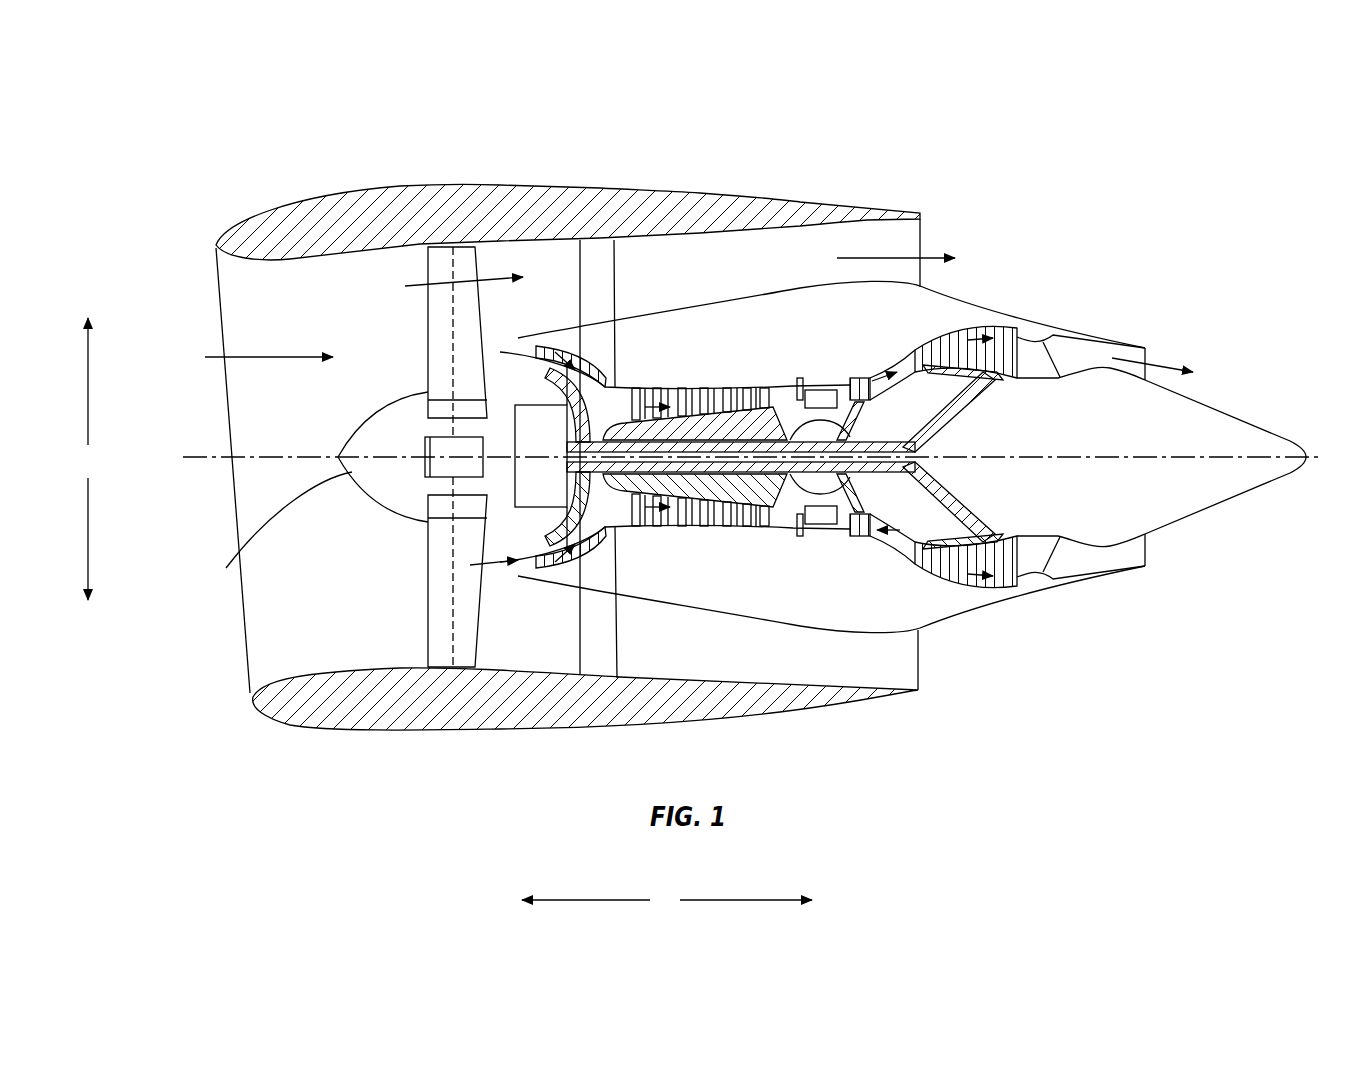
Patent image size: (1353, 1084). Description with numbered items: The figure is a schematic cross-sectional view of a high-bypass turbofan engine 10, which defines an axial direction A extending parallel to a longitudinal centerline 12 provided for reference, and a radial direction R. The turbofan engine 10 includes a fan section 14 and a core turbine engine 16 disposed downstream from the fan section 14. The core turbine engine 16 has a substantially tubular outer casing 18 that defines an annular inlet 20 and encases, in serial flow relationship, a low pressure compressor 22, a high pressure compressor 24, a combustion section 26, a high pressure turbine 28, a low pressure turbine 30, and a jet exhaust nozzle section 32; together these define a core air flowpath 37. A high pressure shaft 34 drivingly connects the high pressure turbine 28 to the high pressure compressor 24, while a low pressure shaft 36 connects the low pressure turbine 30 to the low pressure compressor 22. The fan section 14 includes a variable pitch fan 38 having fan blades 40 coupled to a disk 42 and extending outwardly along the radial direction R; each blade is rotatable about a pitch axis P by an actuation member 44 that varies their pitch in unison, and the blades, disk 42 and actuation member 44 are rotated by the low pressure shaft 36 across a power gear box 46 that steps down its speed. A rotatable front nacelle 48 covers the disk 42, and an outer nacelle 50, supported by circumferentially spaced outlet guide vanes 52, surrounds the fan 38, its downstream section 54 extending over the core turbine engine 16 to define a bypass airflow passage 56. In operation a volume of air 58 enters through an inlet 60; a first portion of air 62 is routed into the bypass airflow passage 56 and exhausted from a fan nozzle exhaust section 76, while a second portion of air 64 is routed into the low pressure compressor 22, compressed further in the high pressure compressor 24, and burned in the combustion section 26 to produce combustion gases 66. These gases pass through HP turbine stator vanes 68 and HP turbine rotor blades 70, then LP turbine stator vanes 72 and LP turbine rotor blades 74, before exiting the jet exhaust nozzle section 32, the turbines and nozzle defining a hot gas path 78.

The turbofan engine 10 is at (1060, 203).
The longitudinal centerline 12 is at (1083, 453).
The fan section 14 is at (405, 175).
The core turbine engine 16 is at (787, 350).
The outer casing 18 is at (777, 620).
The annular inlet 20 is at (520, 558).
The low pressure compressor 22 is at (578, 520).
The high pressure compressor 24 is at (643, 520).
The combustion section 26 is at (817, 523).
The high pressure turbine 28 is at (930, 520).
The low pressure turbine 30 is at (1000, 583).
The jet exhaust nozzle section 32 is at (1062, 567).
The high pressure shaft 34 is at (850, 410).
The low pressure shaft 36 is at (947, 418).
The core air flowpath 37 is at (903, 548).
The variable pitch fan 38 is at (393, 510).
The fan blades 40 is at (423, 607).
The disk 42 is at (448, 410).
The actuation member 44 is at (425, 438).
The power gear box 46 is at (560, 428).
The front nacelle 48 is at (273, 530).
The outer nacelle 50 is at (473, 730).
The outlet guide vanes 52 is at (620, 267).
The downstream section 54 is at (840, 210).
The bypass airflow passage 56 is at (715, 282).
The volume of air 58 is at (268, 355).
The inlet 60 is at (250, 670).
The first portion of air 62 is at (443, 277).
The second portion of air 64 is at (510, 343).
The combustion gases 66 is at (963, 323).
The HP turbine stator vanes 68 is at (833, 523).
The HP turbine rotor blades 70 is at (905, 495).
The LP turbine stator vanes 72 is at (918, 575).
The LP turbine rotor blades 74 is at (937, 573).
The fan nozzle exhaust section 76 is at (907, 247).
The hot gas path 78 is at (907, 357).
The pitch axis P is at (477, 252).
The radial direction R is at (88, 459).
The axial direction A is at (667, 900).